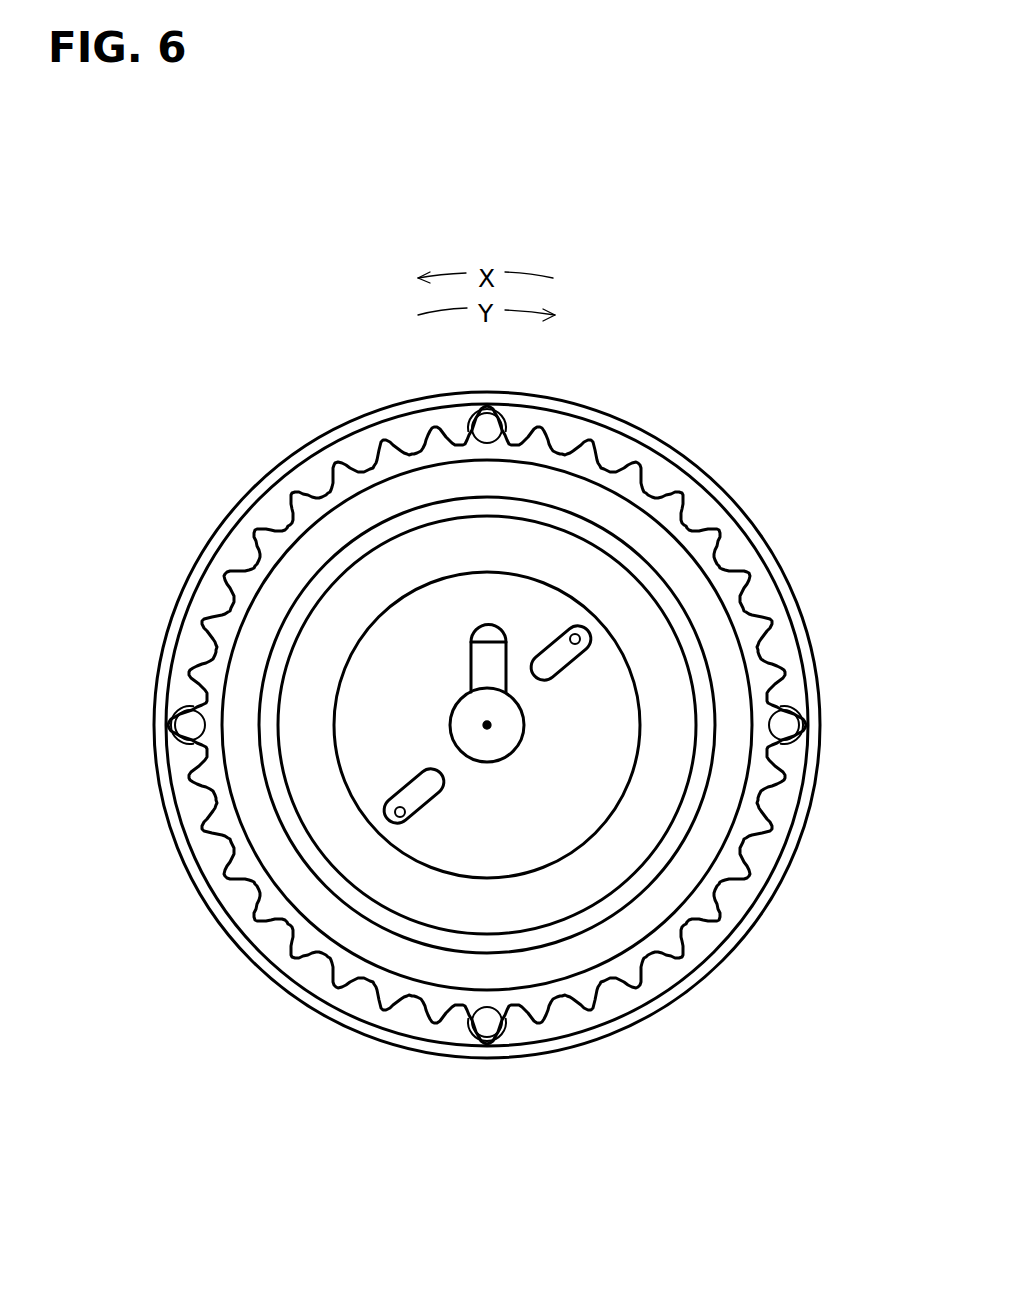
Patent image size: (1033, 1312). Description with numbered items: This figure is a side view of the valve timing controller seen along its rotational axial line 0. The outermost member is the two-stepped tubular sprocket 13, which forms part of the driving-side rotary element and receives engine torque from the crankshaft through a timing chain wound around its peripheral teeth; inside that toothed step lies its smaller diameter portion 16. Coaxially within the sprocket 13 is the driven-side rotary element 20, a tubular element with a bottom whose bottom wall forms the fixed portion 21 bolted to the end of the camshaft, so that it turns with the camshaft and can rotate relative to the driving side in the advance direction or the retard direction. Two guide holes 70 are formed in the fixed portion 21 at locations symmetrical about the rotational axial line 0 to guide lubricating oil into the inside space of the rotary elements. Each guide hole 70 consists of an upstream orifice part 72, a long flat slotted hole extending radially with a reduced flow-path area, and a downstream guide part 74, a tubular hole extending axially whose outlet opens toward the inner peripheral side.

The sprocket 13 is at (370, 409).
The smaller diameter portion 16 is at (340, 552).
The driven-side rotary element 20 is at (697, 750).
The fixed portion 21 is at (342, 780).
The rotational axial line 0 is at (483, 726).
The guide hole 70 is at (643, 821).
The orifice part 72 is at (560, 676).
The guide part 74 is at (577, 636).